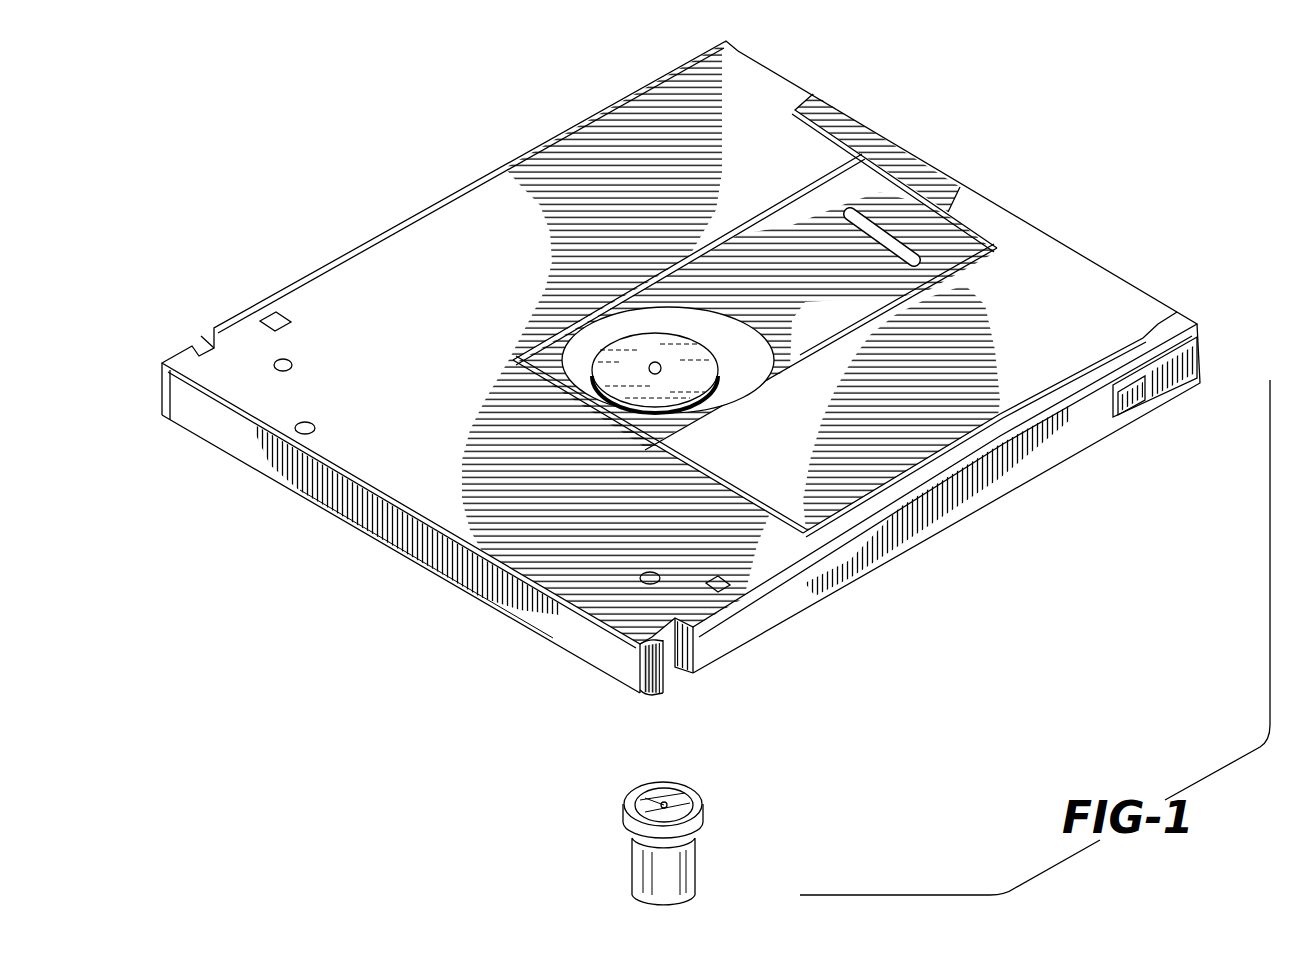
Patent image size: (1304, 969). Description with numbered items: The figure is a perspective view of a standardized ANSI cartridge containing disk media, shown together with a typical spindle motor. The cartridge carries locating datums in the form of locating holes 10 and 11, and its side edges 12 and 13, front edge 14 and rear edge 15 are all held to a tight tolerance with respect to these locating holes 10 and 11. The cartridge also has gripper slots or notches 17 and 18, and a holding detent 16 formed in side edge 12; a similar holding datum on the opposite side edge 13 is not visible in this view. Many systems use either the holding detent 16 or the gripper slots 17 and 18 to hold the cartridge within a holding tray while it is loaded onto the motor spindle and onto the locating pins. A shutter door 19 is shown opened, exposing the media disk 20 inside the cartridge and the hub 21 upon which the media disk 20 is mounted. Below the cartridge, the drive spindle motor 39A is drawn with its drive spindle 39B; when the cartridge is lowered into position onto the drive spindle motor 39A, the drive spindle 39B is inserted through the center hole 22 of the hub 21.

The locating hole 10 is at (723, 580).
The locating hole 11 is at (275, 318).
The side edge 12 is at (955, 512).
The side edge 13 is at (462, 186).
The front edge 14 is at (1107, 226).
The rear edge 15 is at (583, 651).
The holding detent 16 is at (1160, 387).
The gripper slot 17 is at (672, 672).
The gripper slot 18 is at (186, 352).
The shutter door 19 is at (1145, 308).
The media disk 20 is at (835, 247).
The hub 21 is at (617, 350).
The center hole 22 is at (660, 365).
The drive spindle motor 39A is at (700, 868).
The drive spindle 39B is at (685, 782).